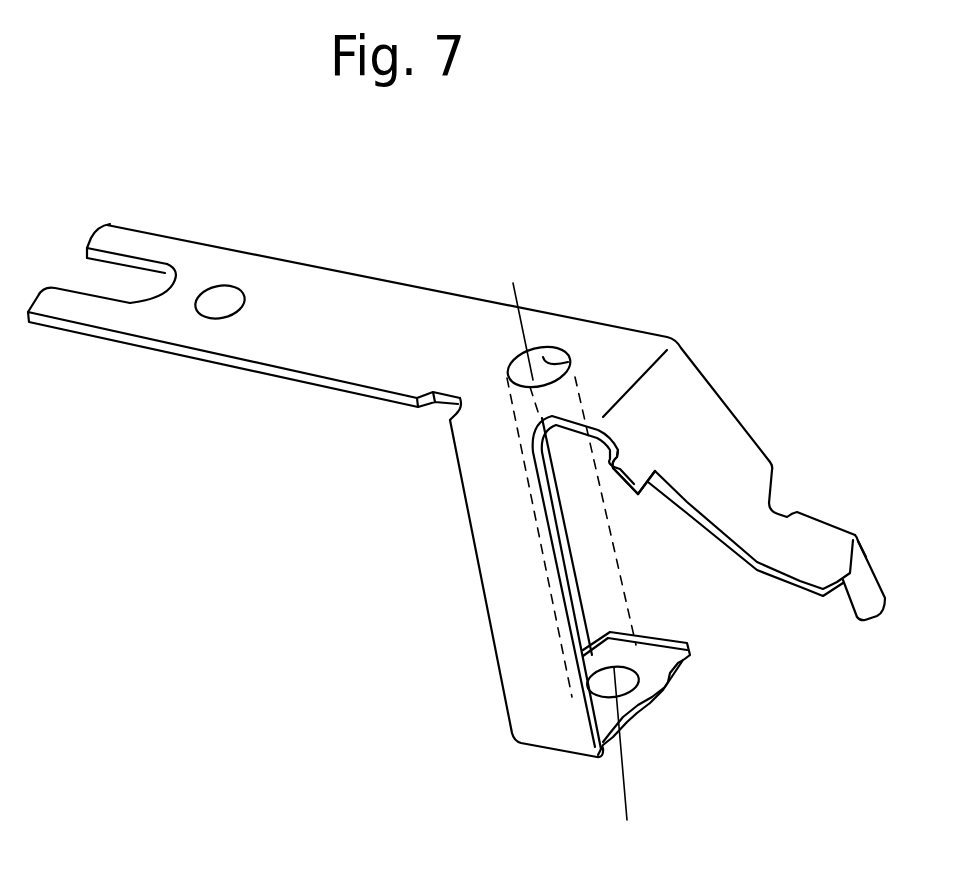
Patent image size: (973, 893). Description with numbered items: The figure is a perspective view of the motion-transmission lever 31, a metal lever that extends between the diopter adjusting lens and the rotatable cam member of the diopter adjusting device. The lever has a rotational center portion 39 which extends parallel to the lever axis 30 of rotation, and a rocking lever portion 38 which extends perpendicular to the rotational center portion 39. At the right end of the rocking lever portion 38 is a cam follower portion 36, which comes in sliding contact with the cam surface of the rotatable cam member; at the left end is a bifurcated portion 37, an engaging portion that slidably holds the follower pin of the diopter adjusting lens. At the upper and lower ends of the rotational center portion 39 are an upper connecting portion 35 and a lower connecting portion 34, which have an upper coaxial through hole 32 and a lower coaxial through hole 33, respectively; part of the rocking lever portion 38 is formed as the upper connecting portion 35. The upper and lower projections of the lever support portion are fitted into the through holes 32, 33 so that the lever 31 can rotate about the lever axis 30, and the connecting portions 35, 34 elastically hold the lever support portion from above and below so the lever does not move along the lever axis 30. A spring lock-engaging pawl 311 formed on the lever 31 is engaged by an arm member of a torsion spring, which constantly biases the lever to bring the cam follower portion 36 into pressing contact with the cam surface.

The lever axis 30 is at (533, 303).
The motion-transmission lever 31 is at (826, 252).
The upper coaxial through hole 32 is at (567, 357).
The lower coaxial through hole 33 is at (630, 717).
The lower connecting portion 34 is at (650, 685).
The upper connecting portion 35 is at (562, 325).
The cam follower portion 36 is at (865, 555).
The bifurcated portion 37 is at (118, 265).
The rocking lever portion 38 is at (457, 310).
The rotational center portion 39 is at (512, 675).
The spring lock-engaging pawl 311 is at (645, 465).